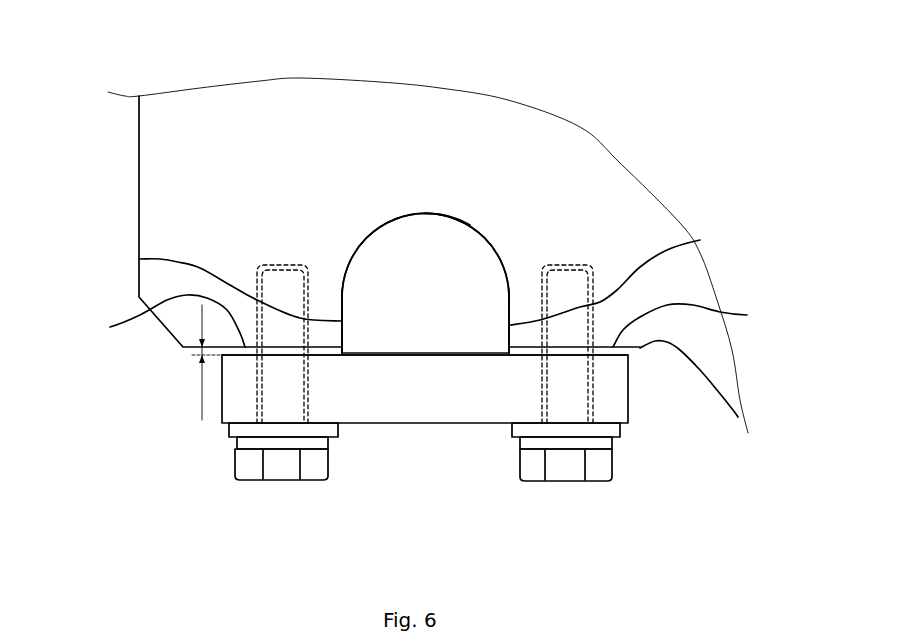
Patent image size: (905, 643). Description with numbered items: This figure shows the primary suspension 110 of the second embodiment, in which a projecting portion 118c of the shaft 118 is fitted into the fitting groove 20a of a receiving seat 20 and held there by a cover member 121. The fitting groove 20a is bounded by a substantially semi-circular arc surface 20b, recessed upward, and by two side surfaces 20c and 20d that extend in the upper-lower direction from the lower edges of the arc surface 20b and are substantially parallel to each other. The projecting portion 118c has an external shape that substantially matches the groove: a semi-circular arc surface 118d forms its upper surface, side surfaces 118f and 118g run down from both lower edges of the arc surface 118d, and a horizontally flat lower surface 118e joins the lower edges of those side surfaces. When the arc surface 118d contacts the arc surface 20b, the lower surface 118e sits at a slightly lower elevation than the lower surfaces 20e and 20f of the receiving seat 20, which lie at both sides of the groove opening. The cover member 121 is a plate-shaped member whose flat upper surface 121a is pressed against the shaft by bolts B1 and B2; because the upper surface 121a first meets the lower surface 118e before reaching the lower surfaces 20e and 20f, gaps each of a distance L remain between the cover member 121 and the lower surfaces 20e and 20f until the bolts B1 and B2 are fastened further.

The receiving seat 20 is at (153, 161).
The fitting groove 20a is at (488, 237).
The arc surface 20b is at (386, 223).
The side surface 20c is at (510, 307).
The side surface 20d is at (342, 290).
The lower surface 20e is at (747, 315).
The lower surface 20f is at (110, 327).
The primary suspension 110 is at (712, 168).
The shaft 118 is at (362, 265).
The projecting portion 118c is at (427, 265).
The arc surface 118d is at (453, 215).
The lower surface 118e is at (468, 357).
The side surface 118f is at (700, 240).
The side surface 118g is at (139, 259).
The cover member 121 is at (628, 398).
The plate upper surface 121a is at (368, 357).
The distance L is at (202, 365).
The bolt B1 is at (580, 482).
The bolt B2 is at (273, 482).